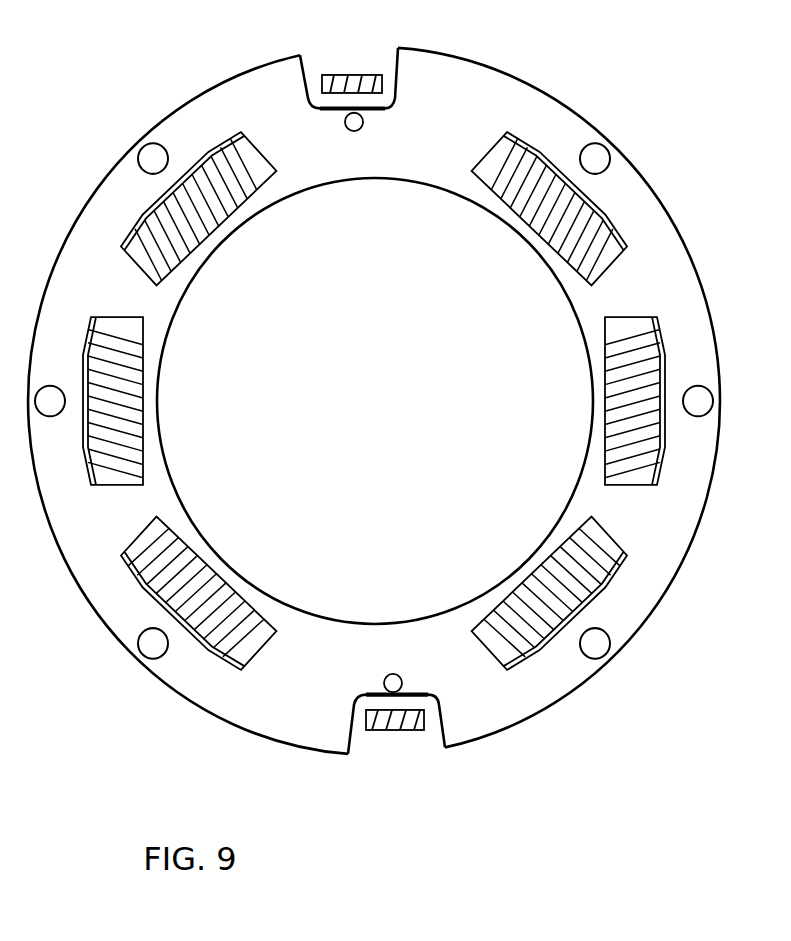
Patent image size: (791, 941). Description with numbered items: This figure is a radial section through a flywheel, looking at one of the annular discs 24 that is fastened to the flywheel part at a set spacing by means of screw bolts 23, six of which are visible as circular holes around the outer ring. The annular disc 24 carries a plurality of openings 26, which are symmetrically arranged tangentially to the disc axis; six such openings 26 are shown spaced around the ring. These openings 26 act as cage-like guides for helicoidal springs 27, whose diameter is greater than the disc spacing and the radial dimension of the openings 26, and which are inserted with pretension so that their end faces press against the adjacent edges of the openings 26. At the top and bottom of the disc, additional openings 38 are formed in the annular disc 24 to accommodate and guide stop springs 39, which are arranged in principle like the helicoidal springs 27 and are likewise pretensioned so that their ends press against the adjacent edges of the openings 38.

The screw bolts 23 is at (146, 154).
The annular disc 24 is at (671, 246).
The openings 26 is at (143, 376).
The helicoidal springs 27 is at (223, 204).
The additional openings 38 is at (357, 85).
The stop springs 39 is at (348, 95).